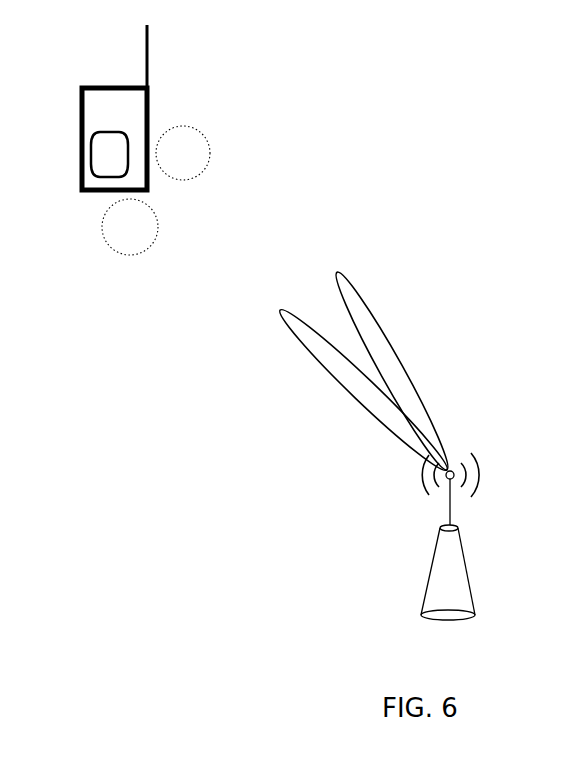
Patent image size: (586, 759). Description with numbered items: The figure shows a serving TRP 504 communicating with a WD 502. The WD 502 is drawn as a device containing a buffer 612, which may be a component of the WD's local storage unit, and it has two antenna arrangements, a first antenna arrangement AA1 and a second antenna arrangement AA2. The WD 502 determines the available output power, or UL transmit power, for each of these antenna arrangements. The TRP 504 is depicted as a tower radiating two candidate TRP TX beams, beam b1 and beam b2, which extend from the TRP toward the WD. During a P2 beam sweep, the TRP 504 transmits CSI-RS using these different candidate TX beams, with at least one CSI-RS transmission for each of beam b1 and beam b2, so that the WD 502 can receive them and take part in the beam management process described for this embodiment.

The WD 502 is at (150, 88).
The buffer 612 is at (92, 167).
The first antenna arrangement AA1 is at (183, 153).
The second antenna arrangement AA2 is at (130, 227).
The beam b1 is at (377, 322).
The beam b2 is at (312, 348).
The TRP 504 is at (470, 578).